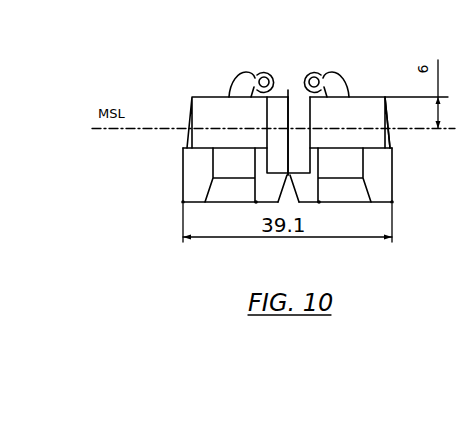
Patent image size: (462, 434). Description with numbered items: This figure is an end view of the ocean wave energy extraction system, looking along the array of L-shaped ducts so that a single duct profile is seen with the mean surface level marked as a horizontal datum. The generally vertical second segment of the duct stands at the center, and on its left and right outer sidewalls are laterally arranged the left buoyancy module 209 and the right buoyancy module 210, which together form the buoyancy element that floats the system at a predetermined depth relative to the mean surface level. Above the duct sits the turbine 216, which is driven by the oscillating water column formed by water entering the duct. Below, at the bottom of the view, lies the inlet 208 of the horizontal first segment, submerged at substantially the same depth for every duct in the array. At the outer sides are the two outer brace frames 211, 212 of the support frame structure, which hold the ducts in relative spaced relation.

The inlet 208 is at (223, 162).
The left buoyancy module 209 is at (280, 112).
The right buoyancy module 210 is at (298, 110).
The outer brace frame 211 is at (190, 112).
The outer brace frame 212 is at (390, 136).
The turbine 216 is at (247, 70).